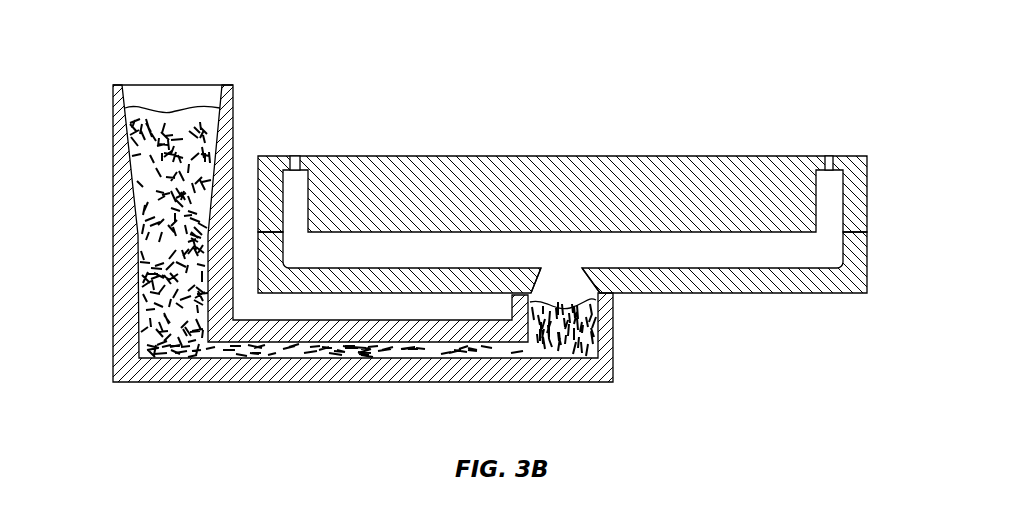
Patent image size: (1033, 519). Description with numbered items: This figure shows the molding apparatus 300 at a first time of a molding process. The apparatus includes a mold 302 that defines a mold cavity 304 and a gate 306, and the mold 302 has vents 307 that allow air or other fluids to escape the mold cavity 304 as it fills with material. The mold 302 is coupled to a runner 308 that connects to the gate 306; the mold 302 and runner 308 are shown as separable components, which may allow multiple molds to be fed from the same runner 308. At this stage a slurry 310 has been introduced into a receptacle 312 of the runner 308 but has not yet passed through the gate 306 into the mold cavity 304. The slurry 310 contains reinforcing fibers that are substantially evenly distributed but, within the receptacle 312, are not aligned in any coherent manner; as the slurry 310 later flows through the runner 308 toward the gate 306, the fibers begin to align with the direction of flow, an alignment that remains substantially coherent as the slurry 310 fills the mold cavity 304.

The molding apparatus 300 is at (122, 70).
The mold 302 is at (868, 200).
The mold cavity 304 is at (828, 243).
The gate 306 is at (583, 268).
The vents 307 is at (293, 157).
The runner 308 is at (112, 310).
The slurry 310 is at (140, 155).
The receptacle 312 is at (208, 85).